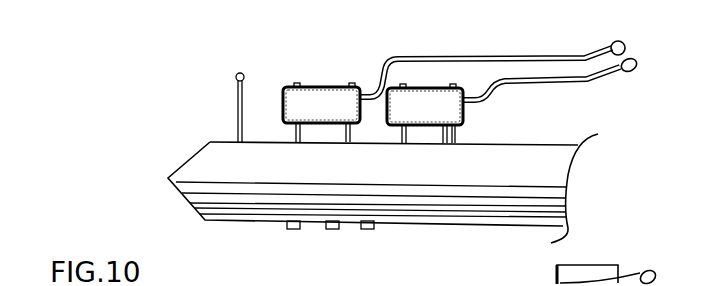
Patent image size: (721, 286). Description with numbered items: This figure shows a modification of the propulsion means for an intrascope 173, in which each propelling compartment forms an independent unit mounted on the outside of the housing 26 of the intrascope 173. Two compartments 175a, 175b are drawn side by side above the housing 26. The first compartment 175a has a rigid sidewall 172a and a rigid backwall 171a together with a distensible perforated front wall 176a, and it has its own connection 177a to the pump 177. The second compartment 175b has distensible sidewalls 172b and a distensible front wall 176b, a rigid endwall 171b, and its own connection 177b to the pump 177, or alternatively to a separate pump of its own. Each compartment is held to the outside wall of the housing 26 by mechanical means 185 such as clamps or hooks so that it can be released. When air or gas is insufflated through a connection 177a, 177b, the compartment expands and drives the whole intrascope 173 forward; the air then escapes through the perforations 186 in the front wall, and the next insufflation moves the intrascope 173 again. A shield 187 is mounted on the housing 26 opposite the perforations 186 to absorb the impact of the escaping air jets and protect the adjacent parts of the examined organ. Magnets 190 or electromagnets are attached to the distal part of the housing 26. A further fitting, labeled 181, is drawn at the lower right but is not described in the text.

The housing 26 is at (232, 227).
The intrascope 173 is at (550, 172).
The magnets 190 is at (295, 231).
The perforations 186 is at (283, 106).
The shield 187 is at (235, 77).
The mechanical means 185 is at (296, 129).
The rigid sidewall 172a is at (312, 88).
The distensible sidewalls 172b is at (421, 88).
The compartment 175a is at (327, 98).
The compartment 175b is at (440, 110).
The distensible perforated front wall 176a is at (280, 98).
The distensible front wall 176b is at (392, 105).
The rigid backwall 171a is at (365, 105).
The rigid endwall 171b is at (472, 120).
The connection 177a is at (430, 57).
The connection 177b is at (534, 93).
The pump 177 is at (626, 43).
The connector 181 is at (656, 271).